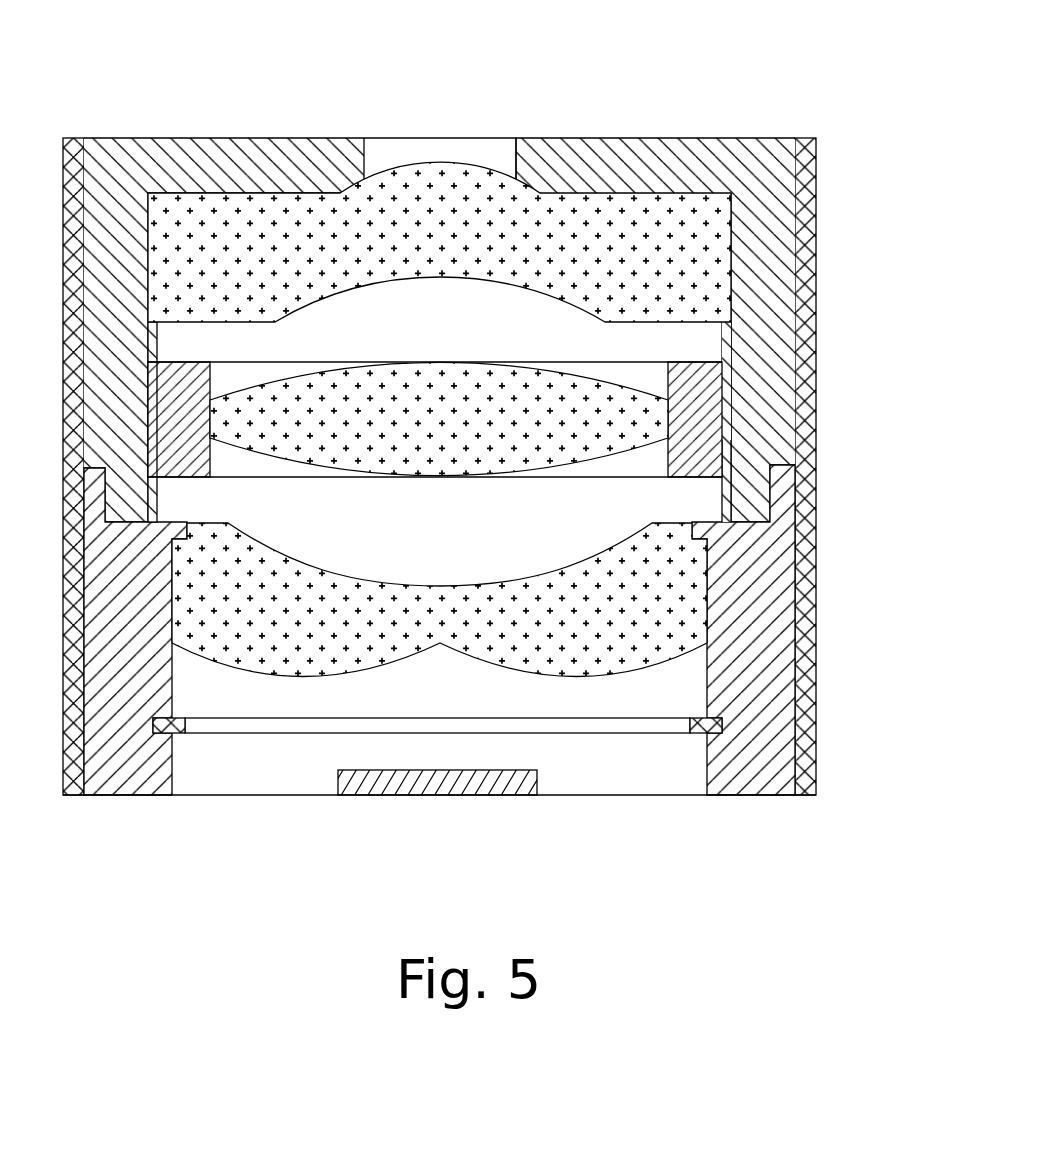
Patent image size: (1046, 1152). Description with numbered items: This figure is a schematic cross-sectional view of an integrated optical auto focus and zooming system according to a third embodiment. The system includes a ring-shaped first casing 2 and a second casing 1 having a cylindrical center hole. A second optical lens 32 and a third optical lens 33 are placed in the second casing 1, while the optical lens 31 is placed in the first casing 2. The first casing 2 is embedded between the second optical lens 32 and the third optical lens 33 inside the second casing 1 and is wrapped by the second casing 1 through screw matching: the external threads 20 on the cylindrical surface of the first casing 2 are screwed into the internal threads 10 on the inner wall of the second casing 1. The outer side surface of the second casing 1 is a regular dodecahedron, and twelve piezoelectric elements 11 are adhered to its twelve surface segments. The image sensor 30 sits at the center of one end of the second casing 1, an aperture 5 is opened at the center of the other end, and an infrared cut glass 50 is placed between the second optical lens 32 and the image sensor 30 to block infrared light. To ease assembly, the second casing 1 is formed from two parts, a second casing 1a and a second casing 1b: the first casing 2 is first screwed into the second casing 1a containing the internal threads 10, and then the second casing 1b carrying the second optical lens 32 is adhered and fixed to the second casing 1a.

The second casing 1 is at (457, 272).
The second casing (first part) 1a is at (439, 103).
The second casing (second part) 1b is at (480, 599).
The first casing 2 is at (406, 252).
The aperture 5 is at (440, 106).
The internal threads 10 is at (521, 356).
The piezoelectric elements 11 is at (483, 466).
The external threads 20 is at (808, 259).
The image sensor 30 is at (442, 826).
The optical lens 31 is at (439, 247).
The second optical lens 32 is at (439, 705).
The third optical lens 33 is at (439, 171).
The infrared cut glass 50 is at (437, 791).